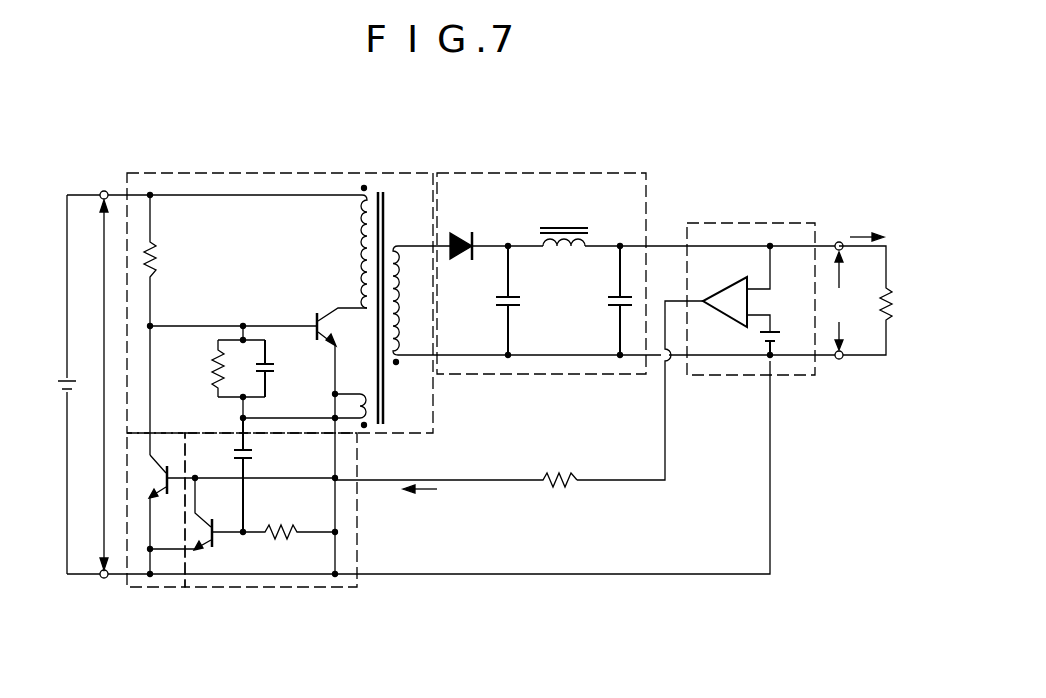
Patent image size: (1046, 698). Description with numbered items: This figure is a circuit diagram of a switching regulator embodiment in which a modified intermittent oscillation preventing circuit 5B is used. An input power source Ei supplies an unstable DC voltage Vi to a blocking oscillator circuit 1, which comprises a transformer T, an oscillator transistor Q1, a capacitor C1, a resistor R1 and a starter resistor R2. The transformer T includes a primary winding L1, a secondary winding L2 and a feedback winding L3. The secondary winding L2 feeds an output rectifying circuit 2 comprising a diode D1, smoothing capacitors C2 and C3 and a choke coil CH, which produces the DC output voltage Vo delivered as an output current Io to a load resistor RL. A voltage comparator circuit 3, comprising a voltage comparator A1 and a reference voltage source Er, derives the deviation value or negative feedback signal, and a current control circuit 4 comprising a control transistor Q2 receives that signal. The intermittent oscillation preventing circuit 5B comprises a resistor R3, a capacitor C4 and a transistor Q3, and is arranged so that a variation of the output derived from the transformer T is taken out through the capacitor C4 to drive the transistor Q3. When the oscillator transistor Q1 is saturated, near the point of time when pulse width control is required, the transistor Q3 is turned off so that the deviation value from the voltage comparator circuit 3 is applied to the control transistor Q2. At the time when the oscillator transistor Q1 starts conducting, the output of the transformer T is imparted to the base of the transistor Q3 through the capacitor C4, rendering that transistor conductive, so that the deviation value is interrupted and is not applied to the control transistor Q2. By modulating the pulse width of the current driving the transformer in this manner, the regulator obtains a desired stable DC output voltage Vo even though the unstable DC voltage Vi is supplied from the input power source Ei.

The blocking oscillator circuit 1 is at (285, 173).
The output rectifying circuit 2 is at (546, 173).
The voltage comparator circuit 3 is at (731, 223).
The current control circuit 4 is at (172, 589).
The intermittent oscillation preventing circuit 5B is at (239, 589).
The resistor R1 is at (207, 368).
The starter resistor R2 is at (162, 260).
The resistor R3 is at (289, 519).
The capacitor C1 is at (278, 368).
The smoothing capacitor C2 is at (607, 300).
The smoothing capacitor C3 is at (520, 300).
The capacitor C4 is at (255, 475).
The oscillator transistor Q1 is at (336, 338).
The control transistor Q2 is at (172, 508).
The transistor Q3 is at (196, 514).
The transformer T is at (390, 218).
The primary winding L1 is at (348, 251).
The secondary winding L2 is at (450, 300).
The feedback winding L3 is at (350, 392).
The diode D1 is at (477, 230).
The choke coil CH is at (564, 224).
The voltage comparator A1 is at (725, 295).
The reference voltage source Er is at (780, 341).
The input power source Ei is at (56, 392).
The unstable DC voltage Vi is at (101, 385).
The stable DC output voltage Vo is at (836, 301).
The output current Io is at (867, 224).
The load resistor RL is at (876, 300).